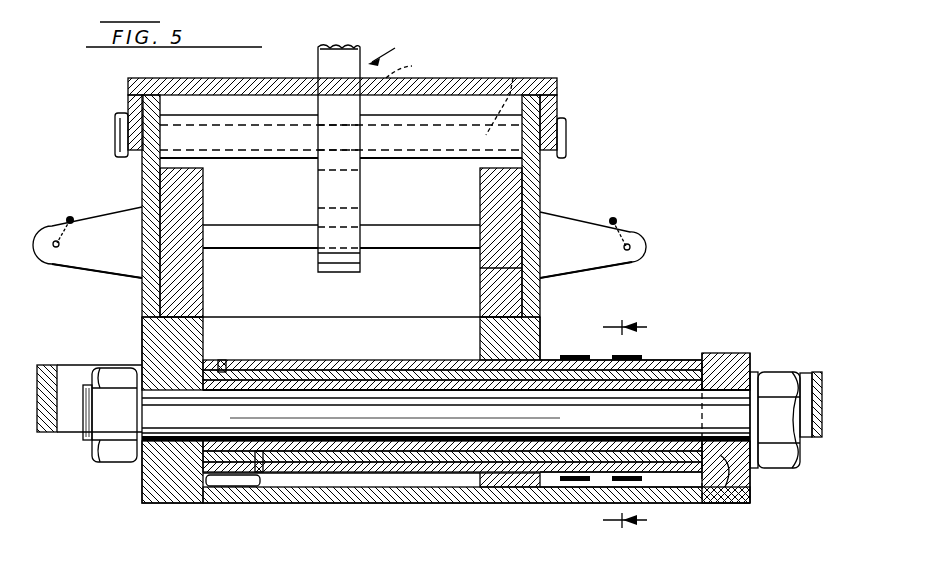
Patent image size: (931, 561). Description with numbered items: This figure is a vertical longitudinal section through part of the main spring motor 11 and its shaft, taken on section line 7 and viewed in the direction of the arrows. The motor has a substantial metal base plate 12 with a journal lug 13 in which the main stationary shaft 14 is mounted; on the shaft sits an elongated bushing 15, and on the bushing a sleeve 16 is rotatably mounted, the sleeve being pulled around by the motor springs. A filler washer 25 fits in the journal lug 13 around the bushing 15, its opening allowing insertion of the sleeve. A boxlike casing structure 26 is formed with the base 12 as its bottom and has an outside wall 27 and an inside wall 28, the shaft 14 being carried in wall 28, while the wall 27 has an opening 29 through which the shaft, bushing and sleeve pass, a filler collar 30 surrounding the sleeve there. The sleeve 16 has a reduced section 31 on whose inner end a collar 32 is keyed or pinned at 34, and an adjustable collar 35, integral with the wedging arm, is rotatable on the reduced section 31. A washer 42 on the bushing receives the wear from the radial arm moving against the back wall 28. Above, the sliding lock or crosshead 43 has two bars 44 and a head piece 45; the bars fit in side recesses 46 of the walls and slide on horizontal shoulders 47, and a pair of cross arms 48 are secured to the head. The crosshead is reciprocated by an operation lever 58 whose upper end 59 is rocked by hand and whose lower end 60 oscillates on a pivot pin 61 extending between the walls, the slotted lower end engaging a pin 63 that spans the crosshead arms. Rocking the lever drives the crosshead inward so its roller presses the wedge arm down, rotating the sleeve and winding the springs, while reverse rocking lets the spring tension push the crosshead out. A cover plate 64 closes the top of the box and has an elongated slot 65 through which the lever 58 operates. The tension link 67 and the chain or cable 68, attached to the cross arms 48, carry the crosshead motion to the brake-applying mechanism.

The section line 7 is at (628, 421).
The main spring motor 11 is at (120, 484).
The base plate 12 is at (375, 503).
The journal lug 13 is at (762, 345).
The main stationary shaft 14 is at (415, 405).
The elongated bushing 15 is at (690, 362).
The sleeve 16 is at (632, 356).
The filler washer 25 is at (726, 503).
The boxlike casing structure 26 is at (548, 190).
The outside wall 27 is at (540, 320).
The inside wall 28 is at (162, 334).
The opening 29 is at (520, 348).
The filler collar 30 is at (502, 487).
The reduced section 31 is at (376, 360).
The collar 32 is at (262, 360).
The key or pin 34 is at (222, 360).
The adjustable collar 35 is at (320, 360).
The washer 42 is at (208, 487).
The sliding lock or crosshead 43 is at (465, 205).
The bars 44 is at (170, 292).
The head piece 45 is at (398, 299).
The side recesses 46 is at (480, 268).
The horizontal shoulders 47 is at (160, 318).
The cross arms 48 is at (100, 226).
The operation lever 58 is at (389, 48).
The upper end of lever 59 is at (358, 48).
The lower end of lever 60 is at (320, 215).
The pivot pin 61 is at (510, 92).
The pin 63 is at (275, 250).
The cover plate 64 is at (557, 93).
The elongated slot 65 is at (418, 65).
The tension link 67 is at (618, 222).
The chain or cable 68 is at (68, 218).